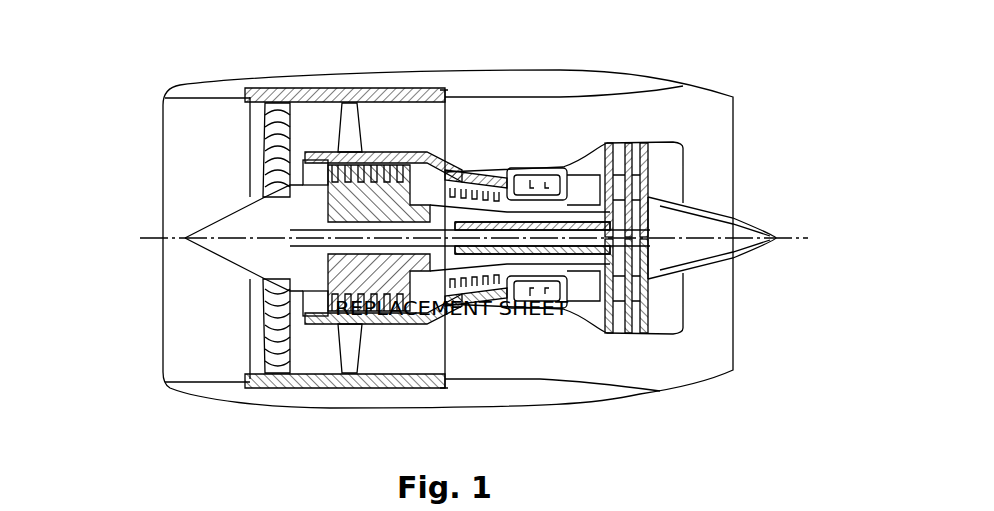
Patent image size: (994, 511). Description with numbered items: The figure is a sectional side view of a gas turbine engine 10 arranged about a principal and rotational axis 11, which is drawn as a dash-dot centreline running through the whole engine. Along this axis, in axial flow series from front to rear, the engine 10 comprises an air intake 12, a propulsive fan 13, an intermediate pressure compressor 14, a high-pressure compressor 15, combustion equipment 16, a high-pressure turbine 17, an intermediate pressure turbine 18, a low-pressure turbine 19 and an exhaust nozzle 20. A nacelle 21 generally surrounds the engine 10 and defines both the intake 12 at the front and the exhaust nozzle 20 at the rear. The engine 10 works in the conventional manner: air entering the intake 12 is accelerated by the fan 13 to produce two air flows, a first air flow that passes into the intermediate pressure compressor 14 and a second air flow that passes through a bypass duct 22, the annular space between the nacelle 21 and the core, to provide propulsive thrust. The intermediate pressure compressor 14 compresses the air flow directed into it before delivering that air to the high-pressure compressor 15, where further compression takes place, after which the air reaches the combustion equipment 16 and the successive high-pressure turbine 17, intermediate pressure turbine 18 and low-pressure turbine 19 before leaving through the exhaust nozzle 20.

The gas turbine engine 10 is at (148, 136).
The principal and rotational axis 11 is at (162, 238).
The air intake 12 is at (214, 99).
The propulsive fan 13 is at (268, 352).
The intermediate pressure compressor 14 is at (388, 322).
The high-pressure compressor 15 is at (465, 182).
The combustion equipment 16 is at (520, 310).
The high-pressure turbine 17 is at (561, 310).
The intermediate pressure turbine 18 is at (590, 166).
The low-pressure turbine 19 is at (597, 323).
The exhaust nozzle 20 is at (735, 370).
The nacelle 21 is at (565, 70).
The bypass duct 22 is at (422, 138).